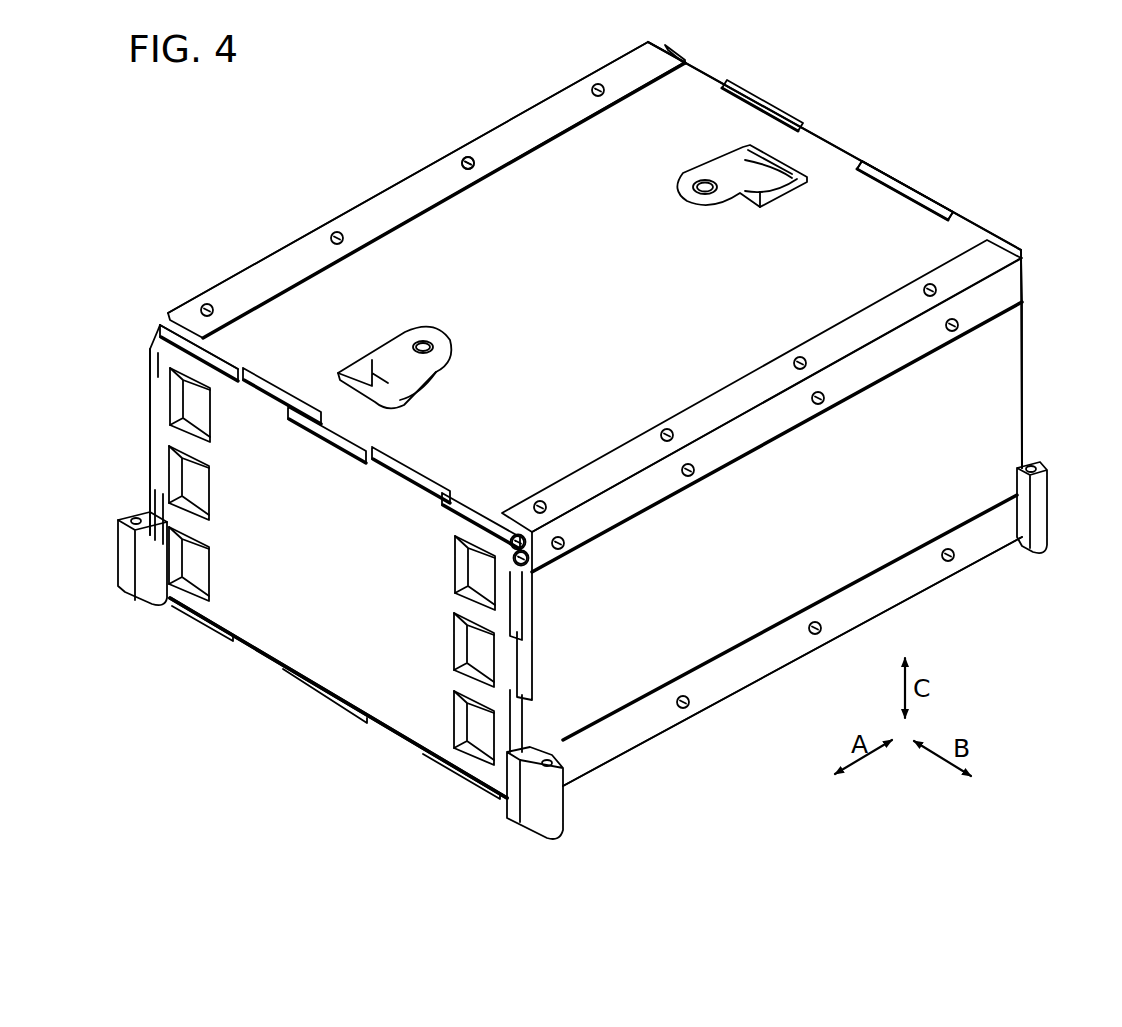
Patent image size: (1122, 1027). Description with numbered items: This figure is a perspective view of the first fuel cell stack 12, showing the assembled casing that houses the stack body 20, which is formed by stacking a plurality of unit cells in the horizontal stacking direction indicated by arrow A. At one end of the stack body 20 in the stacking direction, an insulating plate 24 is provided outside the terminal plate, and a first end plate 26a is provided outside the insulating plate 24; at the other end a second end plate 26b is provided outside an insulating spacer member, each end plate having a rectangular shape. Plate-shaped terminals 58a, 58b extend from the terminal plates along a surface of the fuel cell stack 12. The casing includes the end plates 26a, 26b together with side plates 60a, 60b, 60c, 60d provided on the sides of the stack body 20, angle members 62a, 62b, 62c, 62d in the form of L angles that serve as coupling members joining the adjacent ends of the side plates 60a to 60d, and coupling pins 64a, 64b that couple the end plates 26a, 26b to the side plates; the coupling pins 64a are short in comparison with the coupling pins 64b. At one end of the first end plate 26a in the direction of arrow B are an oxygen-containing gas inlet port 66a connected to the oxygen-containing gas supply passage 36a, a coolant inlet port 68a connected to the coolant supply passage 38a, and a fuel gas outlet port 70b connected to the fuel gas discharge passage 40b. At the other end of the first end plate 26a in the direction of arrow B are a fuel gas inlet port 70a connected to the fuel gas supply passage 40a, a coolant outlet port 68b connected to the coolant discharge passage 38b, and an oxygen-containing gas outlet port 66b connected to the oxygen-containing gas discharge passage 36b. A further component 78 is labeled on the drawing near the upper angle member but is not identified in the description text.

The first fuel cell stack 12 is at (545, 440).
The stack body 20 is at (580, 295).
The insulating plate 24 is at (426, 190).
The first end plate 26a is at (288, 620).
The second end plate 26b is at (947, 198).
The oxygen-containing gas supply passage 36a is at (187, 408).
The oxygen-containing gas discharge passage 36b is at (483, 727).
The coolant supply passage 38a is at (187, 483).
The coolant discharge passage 38b is at (483, 647).
The fuel gas supply passage 40a is at (490, 570).
The fuel gas discharge passage 40b is at (105, 547).
The plate-shaped terminal 58a is at (422, 337).
The plate-shaped terminal 58b is at (698, 177).
The side plate 60a is at (987, 401).
The side plate 60b is at (530, 288).
The side plate 60c is at (283, 285).
The side plate 60d is at (747, 657).
The angle member 62a is at (757, 390).
The angle member 62b is at (426, 190).
The angle member 62c is at (517, 130).
The angle member 62d is at (913, 578).
The coupling pin 64a is at (544, 561).
The coupling pin 64b is at (522, 535).
The oxygen-containing gas inlet port 66a is at (142, 405).
The oxygen-containing gas outlet port 66b is at (433, 721).
The coolant inlet port 68a is at (141, 483).
The coolant outlet port 68b is at (432, 650).
The fuel gas inlet port 70a is at (436, 573).
The fuel gas outlet port 70b is at (115, 547).
The screw 78 is at (468, 157).